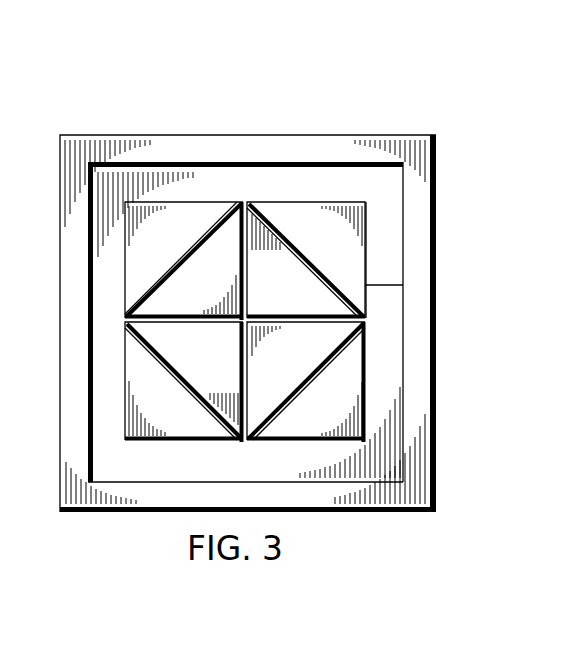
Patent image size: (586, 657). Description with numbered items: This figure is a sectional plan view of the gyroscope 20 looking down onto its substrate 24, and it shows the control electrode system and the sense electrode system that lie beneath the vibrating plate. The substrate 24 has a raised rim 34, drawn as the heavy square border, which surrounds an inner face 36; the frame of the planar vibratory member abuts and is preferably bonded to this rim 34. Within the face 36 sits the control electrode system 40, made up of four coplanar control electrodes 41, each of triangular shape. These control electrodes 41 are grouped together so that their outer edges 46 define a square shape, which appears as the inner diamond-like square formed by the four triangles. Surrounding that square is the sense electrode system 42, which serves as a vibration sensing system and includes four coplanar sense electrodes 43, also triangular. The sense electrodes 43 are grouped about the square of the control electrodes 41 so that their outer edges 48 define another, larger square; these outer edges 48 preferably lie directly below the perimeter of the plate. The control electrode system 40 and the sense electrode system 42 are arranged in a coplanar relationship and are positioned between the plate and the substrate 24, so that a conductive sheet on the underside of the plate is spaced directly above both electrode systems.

The gyroscope 20 is at (437, 144).
The substrate 24 is at (413, 513).
The raised rim 34 is at (307, 478).
The face 36 is at (381, 434).
The control electrode system 40 is at (278, 226).
The control electrodes 41 is at (263, 250).
The sense electrode system 42 is at (369, 238).
The sense electrodes 43 is at (353, 262).
The outer edges 46 is at (218, 226).
The outer edges 48 is at (403, 285).